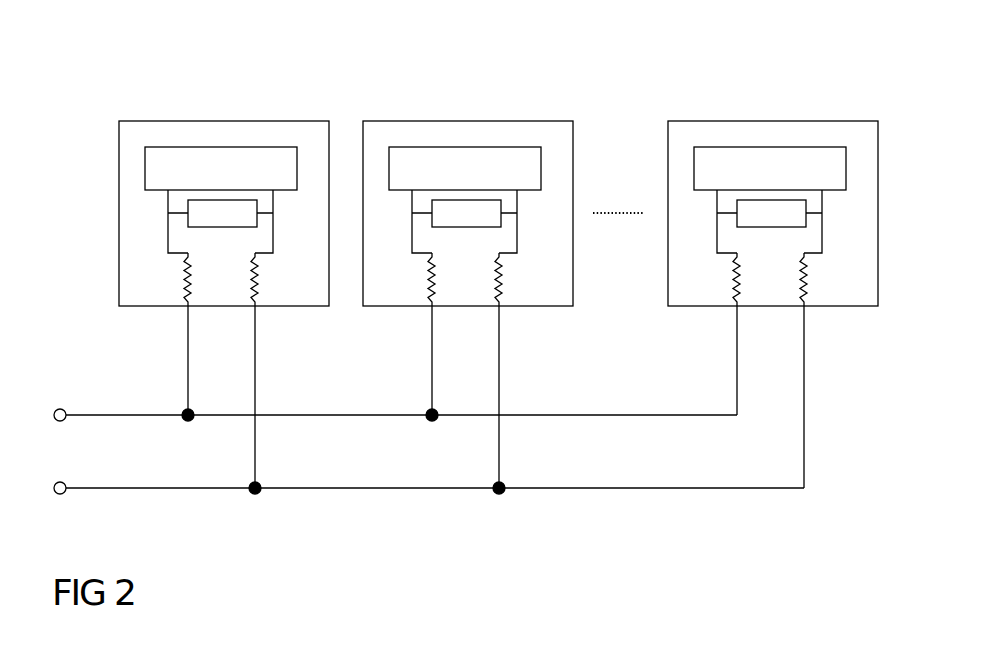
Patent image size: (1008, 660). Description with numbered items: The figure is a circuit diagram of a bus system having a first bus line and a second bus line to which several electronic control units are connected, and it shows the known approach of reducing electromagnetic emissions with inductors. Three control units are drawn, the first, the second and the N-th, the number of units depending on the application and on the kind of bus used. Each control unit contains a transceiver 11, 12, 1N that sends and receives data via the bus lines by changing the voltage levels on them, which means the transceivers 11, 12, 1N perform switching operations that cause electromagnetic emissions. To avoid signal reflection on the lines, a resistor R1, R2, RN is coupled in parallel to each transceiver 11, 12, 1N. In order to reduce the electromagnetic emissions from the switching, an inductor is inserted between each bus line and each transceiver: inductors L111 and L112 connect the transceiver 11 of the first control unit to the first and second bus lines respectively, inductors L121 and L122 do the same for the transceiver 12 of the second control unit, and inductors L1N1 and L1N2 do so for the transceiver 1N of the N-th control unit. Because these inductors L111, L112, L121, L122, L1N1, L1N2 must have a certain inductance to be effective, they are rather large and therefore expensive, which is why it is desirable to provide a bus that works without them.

The transceiver 11 is at (193, 200).
The transceiver 12 is at (458, 182).
The transceiver 1N is at (742, 200).
The resistor R1 is at (228, 249).
The inductor L111 is at (151, 286).
The inductor L112 is at (293, 286).
The resistor R2 is at (472, 249).
The inductor L121 is at (395, 286).
The inductor L122 is at (537, 286).
The resistor RN is at (777, 249).
The inductor L1N1 is at (702, 286).
The inductor L1N2 is at (842, 286).